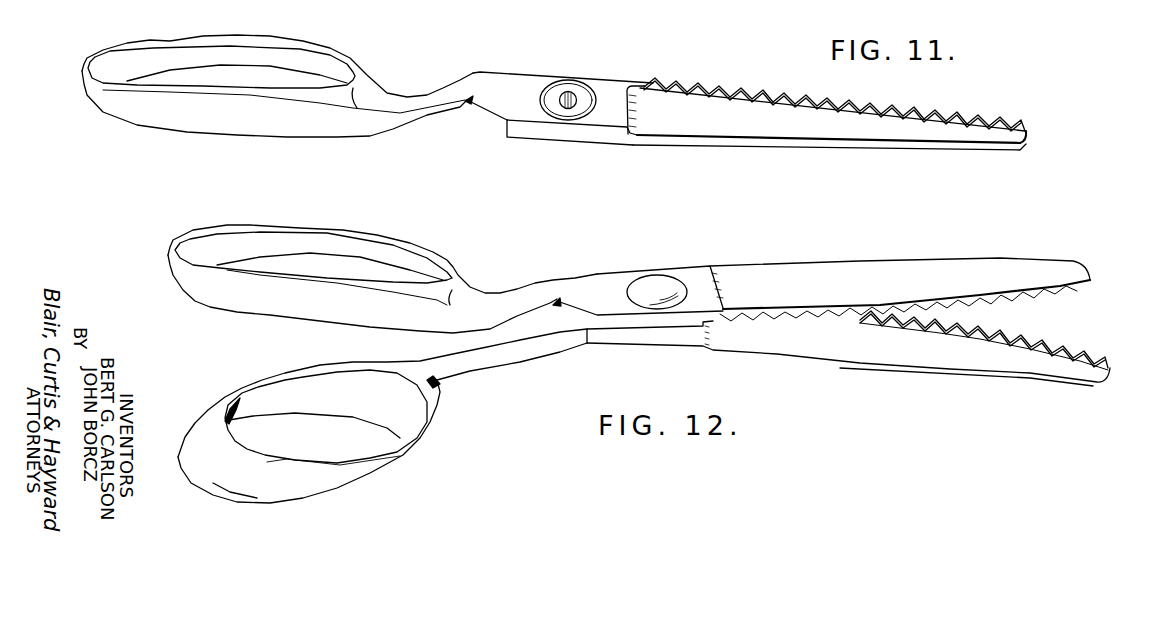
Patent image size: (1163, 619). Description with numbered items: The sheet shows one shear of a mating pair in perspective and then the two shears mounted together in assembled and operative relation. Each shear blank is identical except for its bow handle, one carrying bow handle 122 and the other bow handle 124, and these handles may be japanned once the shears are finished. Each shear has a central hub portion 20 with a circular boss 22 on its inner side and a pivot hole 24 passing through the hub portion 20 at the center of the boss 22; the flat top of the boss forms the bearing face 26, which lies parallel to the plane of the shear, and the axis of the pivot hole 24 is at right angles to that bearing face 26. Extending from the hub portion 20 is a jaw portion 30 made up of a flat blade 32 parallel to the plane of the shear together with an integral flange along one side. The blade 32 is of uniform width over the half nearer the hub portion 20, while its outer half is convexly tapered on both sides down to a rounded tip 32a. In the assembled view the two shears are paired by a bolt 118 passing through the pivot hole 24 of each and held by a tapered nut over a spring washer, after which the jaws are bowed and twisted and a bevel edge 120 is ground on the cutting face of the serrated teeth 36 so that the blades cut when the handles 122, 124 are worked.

In FIG. 11, the central hub portion 20 is at (523, 75).
In FIG. 11, the circular boss 22 is at (822, 98).
In FIG. 11, the pivot hole 24 is at (570, 92).
In FIG. 11, the bearing face 26 is at (567, 110).
In FIG. 11, the jaw portion 30 is at (762, 152).
In FIG. 12, the jaw portion 30 is at (837, 380).
In FIG. 11, the flat blade 32 is at (833, 138).
In FIG. 11, the rounded tip 32a is at (1027, 137).
In FIG. 11, the serrated teeth 36 is at (777, 90).
In FIG. 12, the serrated teeth 36 is at (1037, 340).
In FIG. 12, the bolt 118 is at (673, 277).
In FIG. 12, the bevel edge 120 is at (1090, 280).
In FIG. 12, the bow handle 122 is at (208, 423).
In FIG. 11, the bow handle 124 is at (117, 55).
In FIG. 12, the bow handle 124 is at (195, 240).